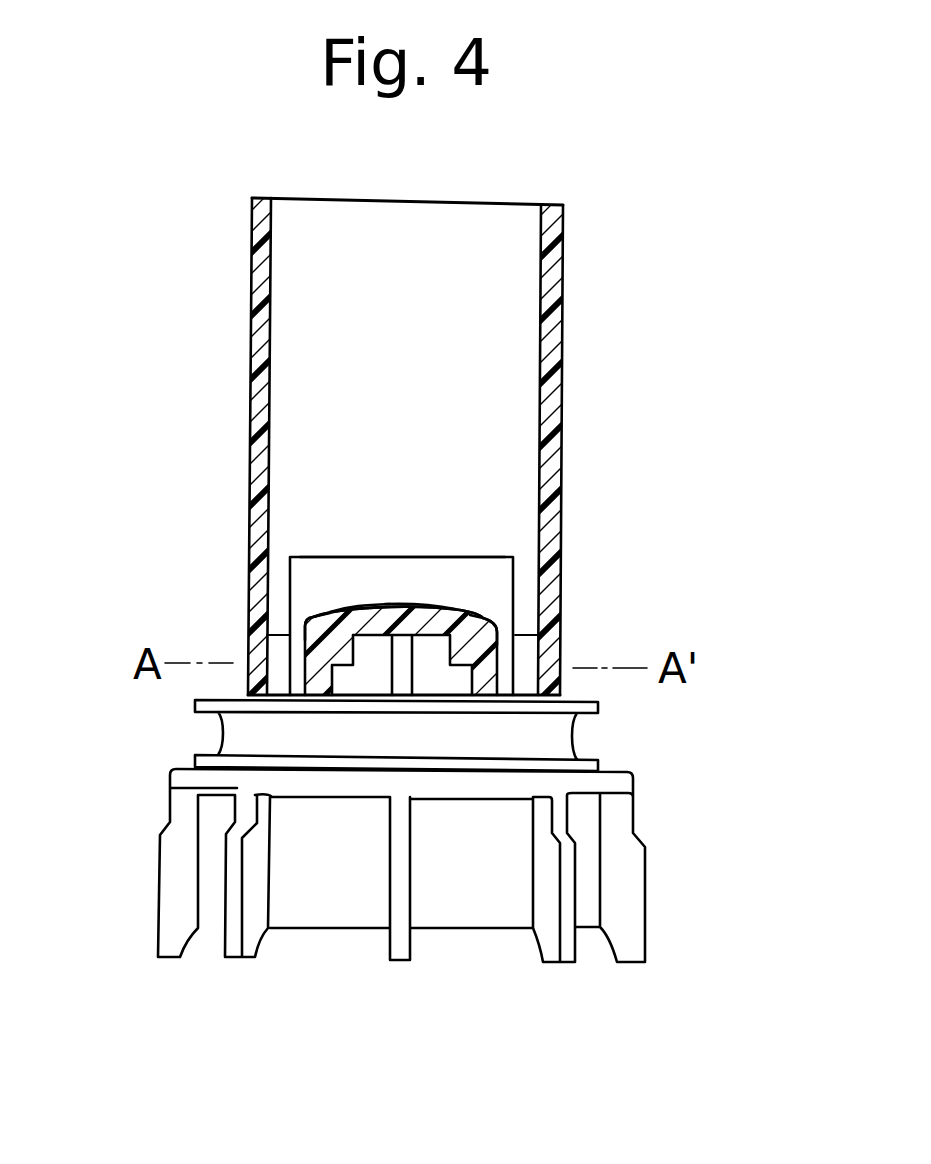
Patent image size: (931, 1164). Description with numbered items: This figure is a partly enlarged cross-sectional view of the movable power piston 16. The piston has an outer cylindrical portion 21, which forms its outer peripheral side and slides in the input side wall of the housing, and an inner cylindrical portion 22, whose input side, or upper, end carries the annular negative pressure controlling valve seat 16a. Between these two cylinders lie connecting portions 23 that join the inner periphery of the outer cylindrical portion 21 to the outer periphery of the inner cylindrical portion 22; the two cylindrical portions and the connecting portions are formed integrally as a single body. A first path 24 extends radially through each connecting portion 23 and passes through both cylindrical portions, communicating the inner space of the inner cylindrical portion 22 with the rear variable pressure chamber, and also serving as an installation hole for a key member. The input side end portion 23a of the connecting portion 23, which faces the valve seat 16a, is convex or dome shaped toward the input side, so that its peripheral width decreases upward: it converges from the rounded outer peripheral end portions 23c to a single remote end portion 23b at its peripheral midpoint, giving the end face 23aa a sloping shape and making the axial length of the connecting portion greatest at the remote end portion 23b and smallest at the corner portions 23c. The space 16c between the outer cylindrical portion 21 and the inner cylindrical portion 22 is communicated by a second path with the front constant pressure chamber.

The movable power piston 16 is at (607, 740).
The annular negative pressure controlling valve seat 16a is at (407, 557).
The space 16c is at (282, 600).
The outer cylindrical portion 21 is at (553, 342).
The inner cylindrical portion 22 is at (315, 588).
The connecting portion 23 is at (485, 660).
The input side end portion 23a is at (450, 603).
The end face 23aa is at (370, 607).
The remote end portion 23b is at (393, 607).
The outer peripheral end portion 23c is at (317, 620).
The first path 24 is at (357, 683).